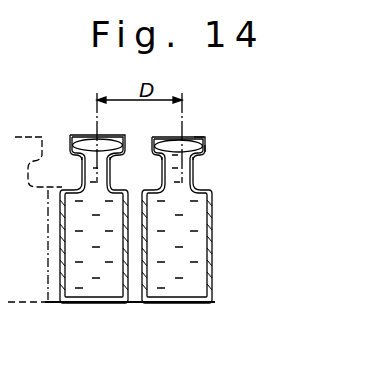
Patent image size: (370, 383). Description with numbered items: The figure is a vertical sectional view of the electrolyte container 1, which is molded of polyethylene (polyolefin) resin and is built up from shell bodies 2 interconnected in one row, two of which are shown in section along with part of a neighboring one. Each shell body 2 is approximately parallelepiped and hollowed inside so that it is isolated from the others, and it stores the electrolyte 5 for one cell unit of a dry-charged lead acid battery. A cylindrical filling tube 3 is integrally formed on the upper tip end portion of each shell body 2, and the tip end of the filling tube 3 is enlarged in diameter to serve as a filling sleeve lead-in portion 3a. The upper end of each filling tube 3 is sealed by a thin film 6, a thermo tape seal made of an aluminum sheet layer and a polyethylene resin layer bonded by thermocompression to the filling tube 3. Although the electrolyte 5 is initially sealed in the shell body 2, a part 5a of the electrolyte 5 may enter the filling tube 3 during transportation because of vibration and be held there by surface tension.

The electrolyte container 1 is at (170, 201).
The shell body 2 is at (20, 305).
The filling tube 3 is at (195, 180).
The filling sleeve lead-in portion 3a is at (207, 148).
The electrolyte 5 is at (207, 296).
The part of the electrolyte 5a is at (190, 133).
The thin film 6 is at (82, 134).